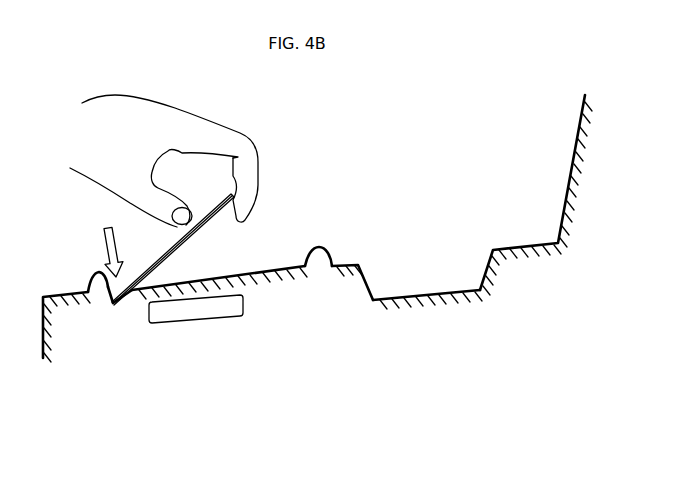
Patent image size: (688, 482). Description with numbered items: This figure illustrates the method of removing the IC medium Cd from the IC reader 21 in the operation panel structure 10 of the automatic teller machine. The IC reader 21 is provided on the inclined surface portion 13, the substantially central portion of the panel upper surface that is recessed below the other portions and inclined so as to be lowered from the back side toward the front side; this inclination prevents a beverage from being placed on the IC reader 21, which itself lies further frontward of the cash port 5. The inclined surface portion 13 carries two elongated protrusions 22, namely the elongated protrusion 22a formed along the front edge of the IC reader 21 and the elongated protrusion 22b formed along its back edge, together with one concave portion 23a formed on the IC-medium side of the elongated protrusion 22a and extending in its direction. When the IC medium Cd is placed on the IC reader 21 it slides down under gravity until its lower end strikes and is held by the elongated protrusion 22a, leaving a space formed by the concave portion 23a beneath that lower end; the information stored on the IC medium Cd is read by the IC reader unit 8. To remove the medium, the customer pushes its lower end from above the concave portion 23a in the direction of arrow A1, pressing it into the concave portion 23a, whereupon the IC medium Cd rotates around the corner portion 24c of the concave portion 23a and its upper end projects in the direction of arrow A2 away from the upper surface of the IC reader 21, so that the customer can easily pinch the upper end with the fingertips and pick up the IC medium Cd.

The operation panel structure 10 is at (396, 193).
The cash port 5 is at (432, 293).
The inclined surface portion 13 is at (343, 259).
The IC reader 21 is at (275, 270).
The elongated protrusions 22 is at (293, 412).
The elongated protrusion 22a is at (101, 296).
The elongated protrusion 22b is at (315, 268).
The concave portion 23a is at (102, 268).
The corner portion 24c is at (140, 302).
The IC reader unit 8 is at (192, 325).
The arrow A1 is at (108, 229).
The arrow A2 is at (205, 238).
The IC medium Cd is at (127, 252).